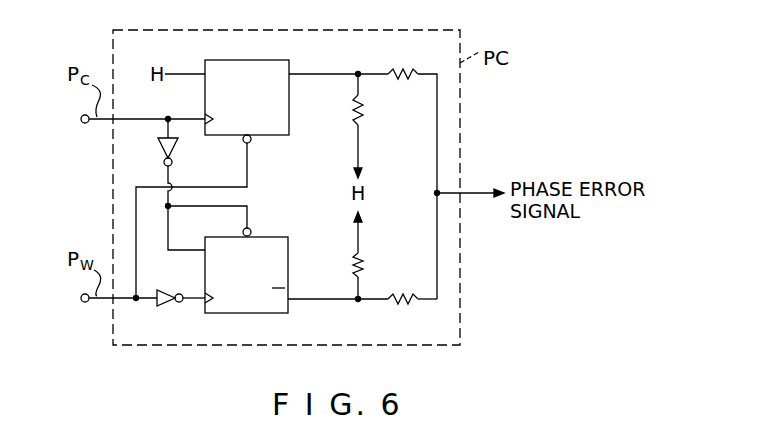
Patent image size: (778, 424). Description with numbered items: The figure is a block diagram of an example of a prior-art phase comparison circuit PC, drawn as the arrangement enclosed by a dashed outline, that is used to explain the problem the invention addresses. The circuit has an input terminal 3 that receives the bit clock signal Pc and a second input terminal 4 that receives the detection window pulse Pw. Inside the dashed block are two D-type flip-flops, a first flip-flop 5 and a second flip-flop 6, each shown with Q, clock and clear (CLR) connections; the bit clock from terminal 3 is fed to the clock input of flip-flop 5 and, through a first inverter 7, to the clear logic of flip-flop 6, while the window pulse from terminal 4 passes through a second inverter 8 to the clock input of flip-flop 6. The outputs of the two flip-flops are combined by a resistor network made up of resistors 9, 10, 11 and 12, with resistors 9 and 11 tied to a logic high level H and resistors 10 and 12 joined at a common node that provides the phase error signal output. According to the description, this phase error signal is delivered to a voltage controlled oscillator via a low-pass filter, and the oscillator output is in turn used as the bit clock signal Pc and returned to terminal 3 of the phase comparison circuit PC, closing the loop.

The input terminal 3 is at (78, 119).
The input terminal 4 is at (78, 298).
The D-type flip-flop 5 is at (240, 60).
The D-type flip-flop 6 is at (283, 237).
The inverter 7 is at (178, 150).
The inverter 8 is at (165, 306).
The resistor 9 is at (366, 113).
The resistor 10 is at (403, 61).
The resistor 11 is at (374, 255).
The resistor 12 is at (407, 305).